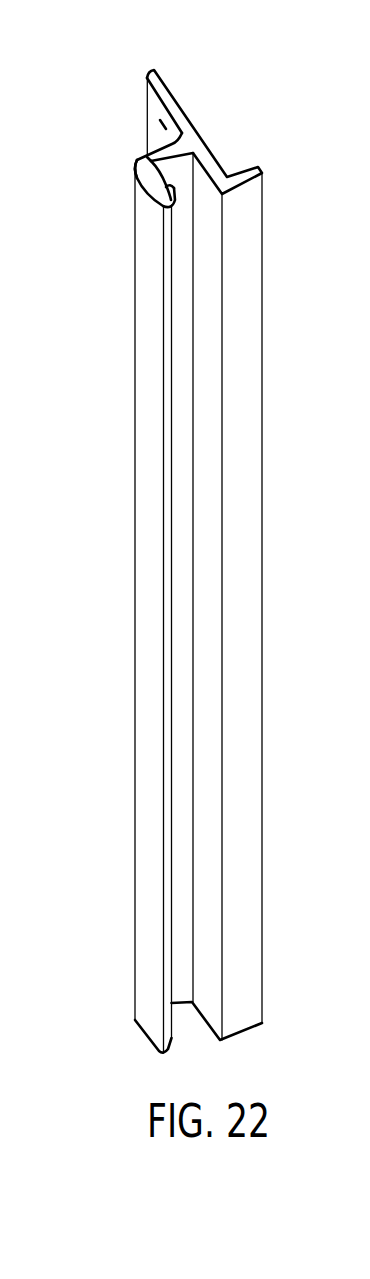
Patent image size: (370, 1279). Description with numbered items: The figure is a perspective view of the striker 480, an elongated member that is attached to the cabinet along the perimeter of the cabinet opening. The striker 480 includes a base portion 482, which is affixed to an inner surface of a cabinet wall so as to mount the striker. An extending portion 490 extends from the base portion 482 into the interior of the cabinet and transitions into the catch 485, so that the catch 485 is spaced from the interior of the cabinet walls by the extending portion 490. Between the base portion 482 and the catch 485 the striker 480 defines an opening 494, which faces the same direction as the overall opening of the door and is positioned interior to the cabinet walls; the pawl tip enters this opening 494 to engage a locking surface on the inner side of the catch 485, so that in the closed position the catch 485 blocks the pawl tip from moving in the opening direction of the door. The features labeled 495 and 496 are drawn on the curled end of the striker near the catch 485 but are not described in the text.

The striker 480 is at (125, 60).
The base portion 482 is at (168, 98).
The catch 485 is at (168, 210).
The extending portion 490 is at (150, 143).
The opening 494 is at (180, 255).
The lip 495 is at (140, 167).
The curl 496 is at (162, 122).